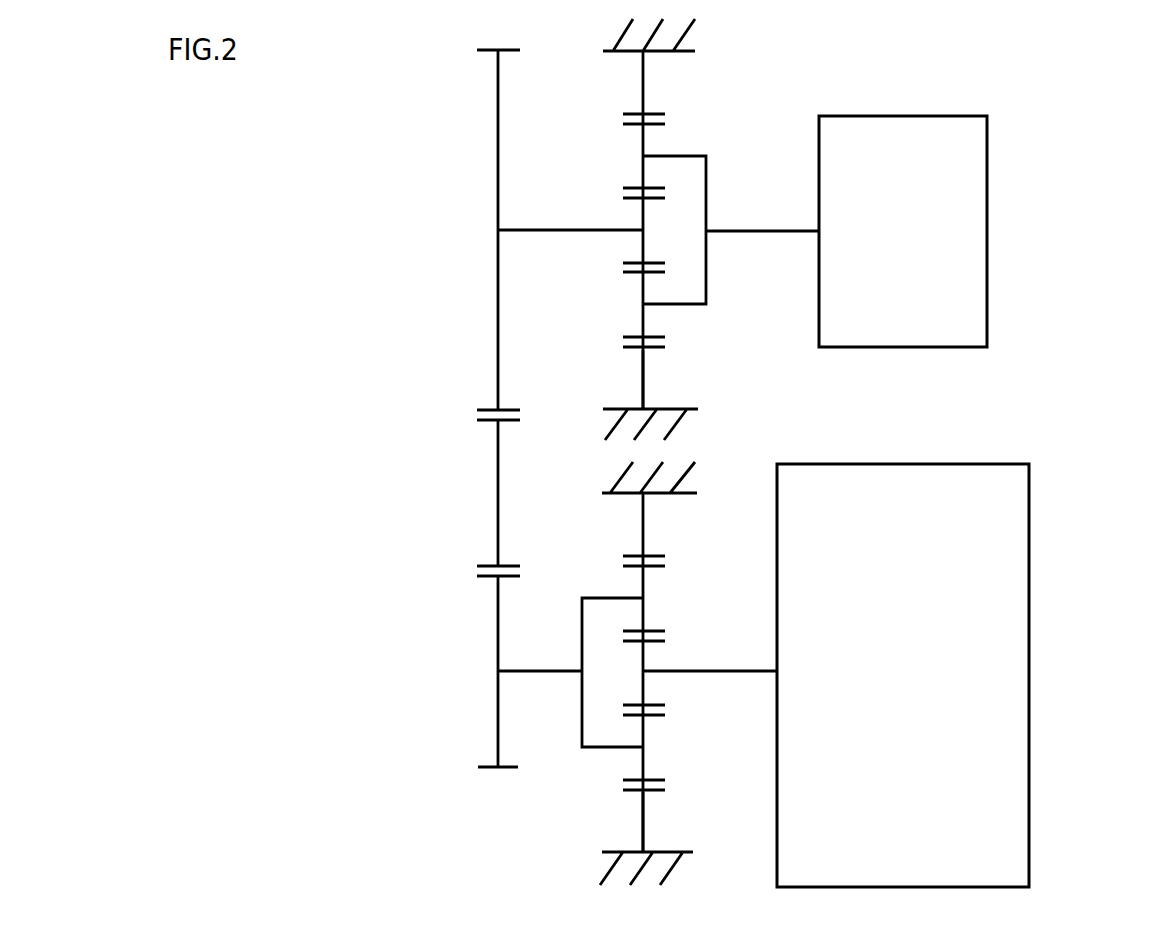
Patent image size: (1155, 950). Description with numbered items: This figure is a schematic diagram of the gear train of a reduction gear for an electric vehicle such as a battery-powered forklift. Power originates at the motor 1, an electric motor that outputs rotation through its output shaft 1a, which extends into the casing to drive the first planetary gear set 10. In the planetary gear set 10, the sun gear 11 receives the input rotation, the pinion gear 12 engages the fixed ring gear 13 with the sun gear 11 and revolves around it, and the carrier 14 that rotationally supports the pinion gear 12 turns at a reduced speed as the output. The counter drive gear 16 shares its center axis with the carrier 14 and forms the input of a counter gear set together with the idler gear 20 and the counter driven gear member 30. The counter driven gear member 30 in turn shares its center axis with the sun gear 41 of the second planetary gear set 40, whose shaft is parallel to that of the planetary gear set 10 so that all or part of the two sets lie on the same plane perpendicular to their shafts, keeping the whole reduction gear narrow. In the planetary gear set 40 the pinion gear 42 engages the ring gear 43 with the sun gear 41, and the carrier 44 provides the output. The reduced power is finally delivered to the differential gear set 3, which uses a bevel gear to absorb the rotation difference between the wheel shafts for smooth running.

The motor 1 is at (1029, 578).
The output shaft 1a is at (740, 670).
The differential gear set 3 is at (987, 188).
The planetary gear set 10 is at (647, 673).
The sun gear 11 is at (643, 690).
The pinion gear 12 is at (643, 737).
The ring gear 13 is at (643, 820).
The carrier 14 is at (593, 748).
The counter drive gear 16 is at (498, 630).
The idler gear 20 is at (498, 495).
The counter driven gear member 30 is at (498, 161).
The planetary gear set 40 is at (656, 229).
The sun gear 41 is at (643, 245).
The pinion gear 42 is at (643, 295).
The ring gear 43 is at (643, 383).
The carrier 44 is at (706, 278).